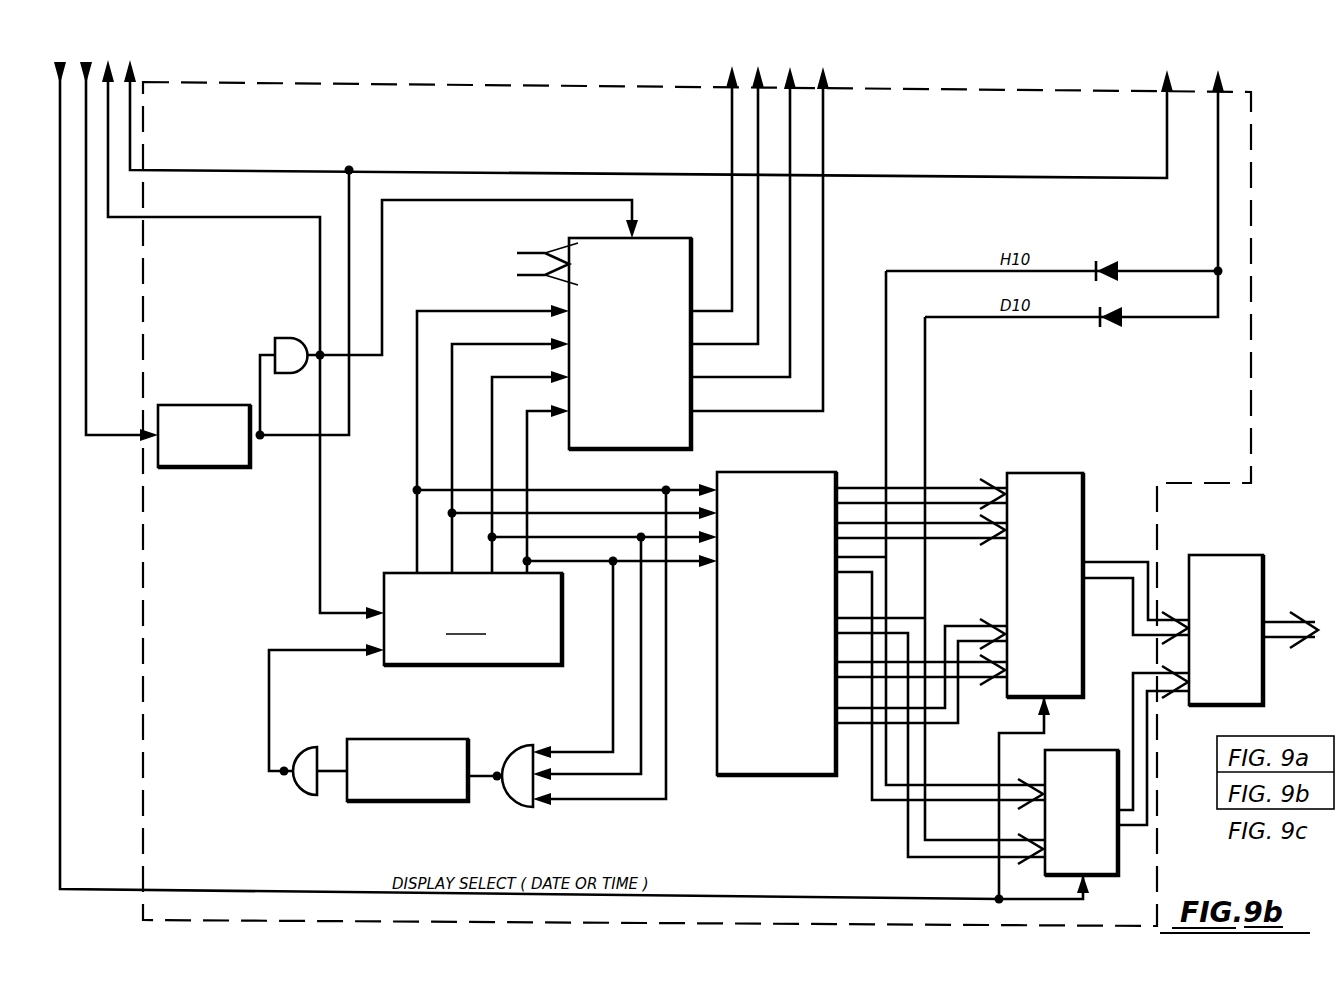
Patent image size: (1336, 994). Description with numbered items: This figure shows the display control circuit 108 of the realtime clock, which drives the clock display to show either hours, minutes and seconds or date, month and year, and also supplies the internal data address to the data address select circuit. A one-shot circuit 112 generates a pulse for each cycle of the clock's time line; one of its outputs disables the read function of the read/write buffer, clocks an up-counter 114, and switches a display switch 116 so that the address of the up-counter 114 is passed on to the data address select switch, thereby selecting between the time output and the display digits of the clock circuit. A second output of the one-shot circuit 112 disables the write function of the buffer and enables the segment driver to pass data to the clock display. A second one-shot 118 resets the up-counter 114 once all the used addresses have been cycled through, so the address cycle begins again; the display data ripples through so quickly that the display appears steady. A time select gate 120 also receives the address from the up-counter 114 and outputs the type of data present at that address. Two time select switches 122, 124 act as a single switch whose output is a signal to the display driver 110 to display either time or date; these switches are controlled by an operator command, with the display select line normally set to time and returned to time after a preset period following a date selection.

The display control circuit 108 is at (246, 272).
The display driver 110 is at (1257, 555).
The one-shot circuit 112 is at (232, 405).
The up-counter 114 is at (563, 645).
The display switch 116 is at (693, 428).
The second one-shot 118 is at (468, 738).
The time select gate 120 is at (716, 735).
The time select switch 122 is at (1062, 473).
The time select switch 124 is at (1120, 849).